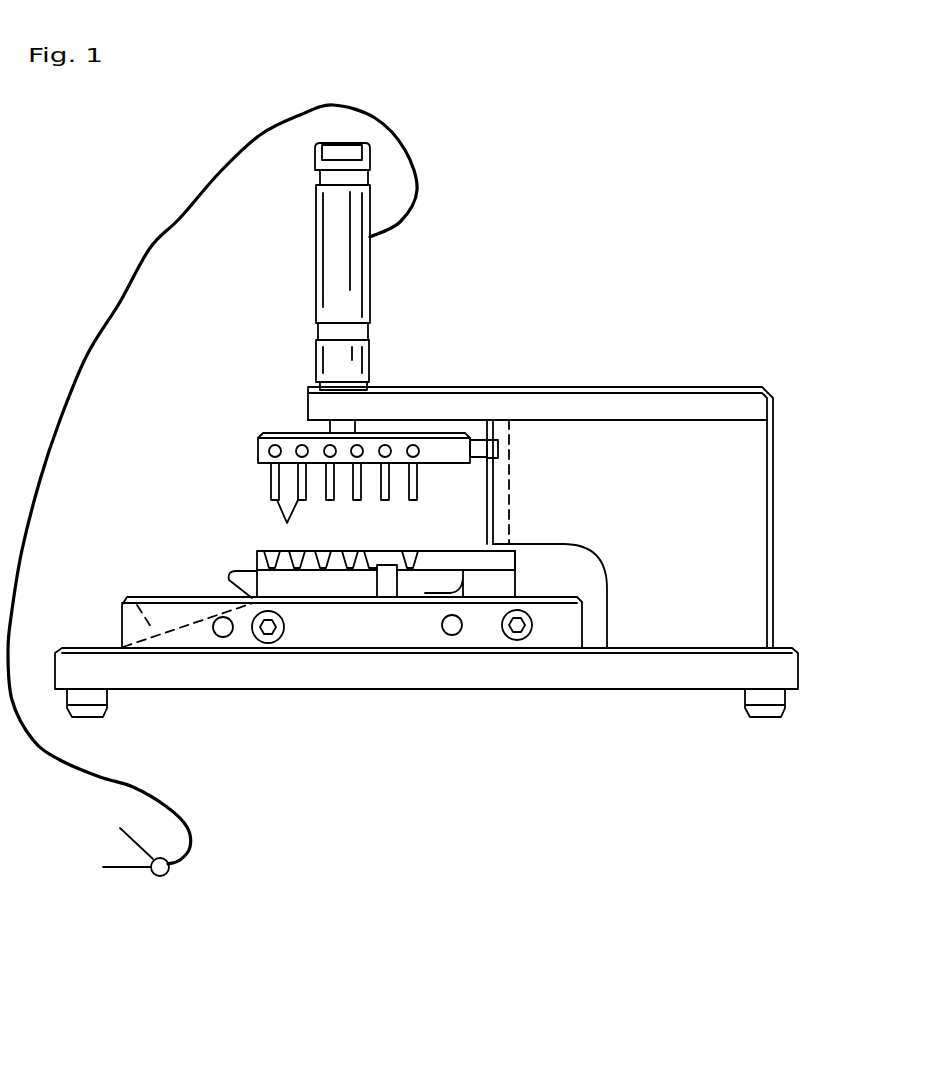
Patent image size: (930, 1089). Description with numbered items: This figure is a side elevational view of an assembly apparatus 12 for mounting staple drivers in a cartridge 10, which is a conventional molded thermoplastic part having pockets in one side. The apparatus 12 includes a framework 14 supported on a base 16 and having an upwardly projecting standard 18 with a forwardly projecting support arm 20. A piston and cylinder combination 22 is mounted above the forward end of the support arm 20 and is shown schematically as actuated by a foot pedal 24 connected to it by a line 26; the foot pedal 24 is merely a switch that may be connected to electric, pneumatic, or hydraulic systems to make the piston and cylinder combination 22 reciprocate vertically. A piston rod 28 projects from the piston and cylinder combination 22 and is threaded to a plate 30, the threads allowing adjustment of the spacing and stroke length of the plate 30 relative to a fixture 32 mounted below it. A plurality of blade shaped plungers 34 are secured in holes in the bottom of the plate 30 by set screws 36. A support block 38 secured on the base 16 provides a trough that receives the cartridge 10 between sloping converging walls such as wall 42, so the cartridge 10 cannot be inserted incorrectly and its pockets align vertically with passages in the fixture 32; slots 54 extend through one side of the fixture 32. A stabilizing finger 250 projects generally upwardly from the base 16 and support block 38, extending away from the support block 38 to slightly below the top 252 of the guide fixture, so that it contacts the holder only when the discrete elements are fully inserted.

The cartridge 10 is at (230, 570).
The apparatus 12 is at (572, 247).
The framework 14 is at (773, 550).
The base 16 is at (652, 687).
The standard 18 is at (772, 463).
The support arm 20 is at (507, 387).
The piston and cylinder combination 22 is at (315, 283).
The foot pedal 24 is at (133, 883).
The line 26 is at (152, 245).
The piston rod 28 is at (347, 427).
The plate 30 is at (258, 450).
The fixture 32 is at (253, 552).
The blade shaped plungers 34 is at (408, 502).
The set screws 36 is at (413, 445).
The support block 38 is at (517, 583).
The sloping converging wall 42 is at (133, 600).
The slots 54 is at (410, 563).
The stabilizing finger 250 is at (398, 587).
The top 252 is at (477, 551).